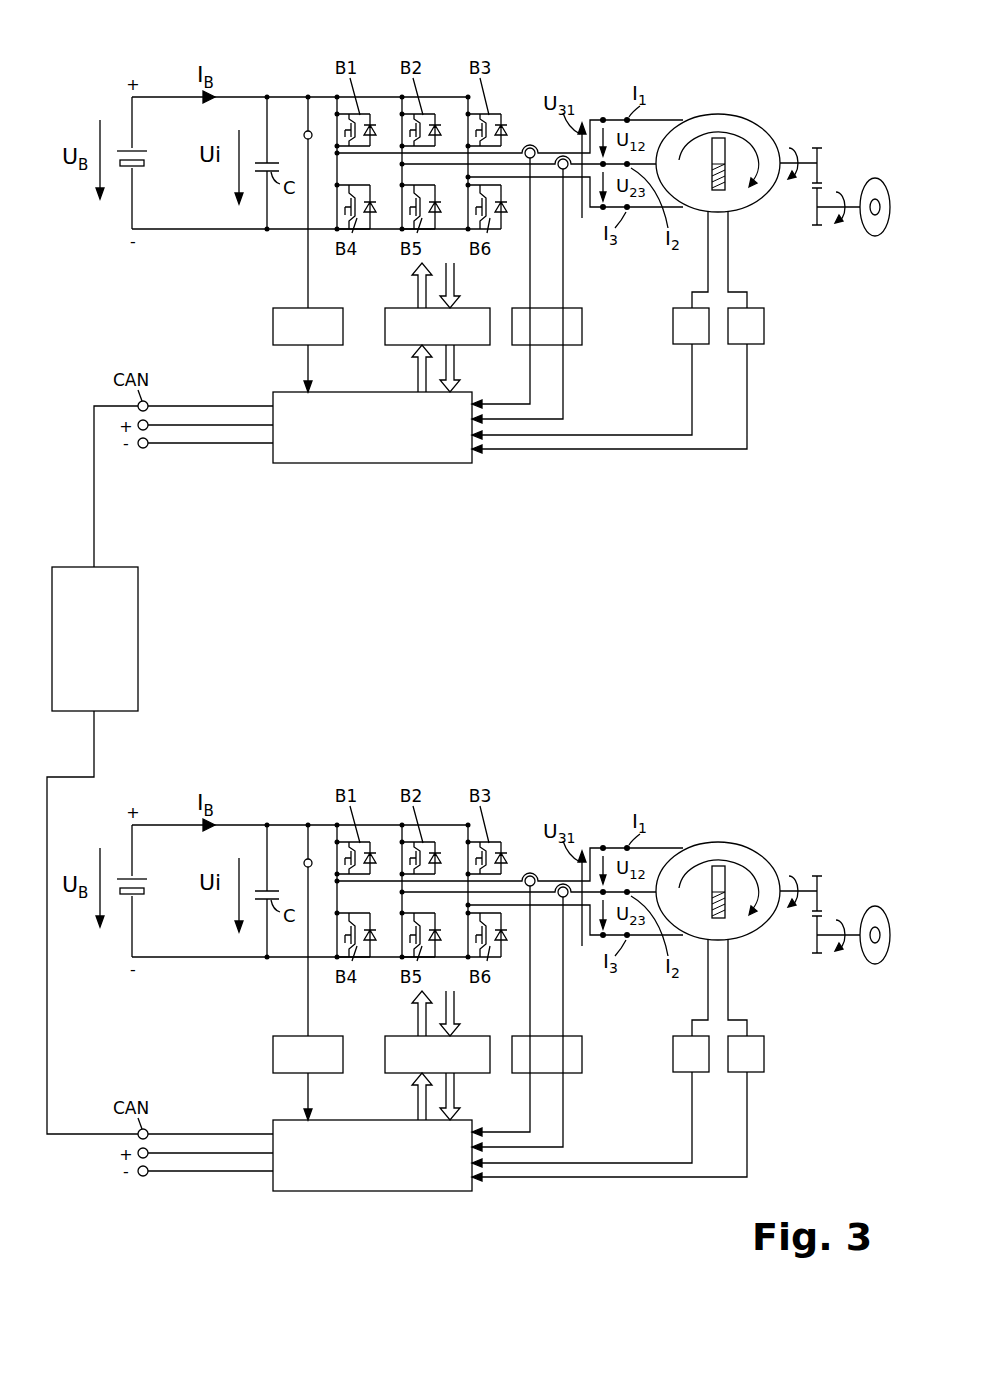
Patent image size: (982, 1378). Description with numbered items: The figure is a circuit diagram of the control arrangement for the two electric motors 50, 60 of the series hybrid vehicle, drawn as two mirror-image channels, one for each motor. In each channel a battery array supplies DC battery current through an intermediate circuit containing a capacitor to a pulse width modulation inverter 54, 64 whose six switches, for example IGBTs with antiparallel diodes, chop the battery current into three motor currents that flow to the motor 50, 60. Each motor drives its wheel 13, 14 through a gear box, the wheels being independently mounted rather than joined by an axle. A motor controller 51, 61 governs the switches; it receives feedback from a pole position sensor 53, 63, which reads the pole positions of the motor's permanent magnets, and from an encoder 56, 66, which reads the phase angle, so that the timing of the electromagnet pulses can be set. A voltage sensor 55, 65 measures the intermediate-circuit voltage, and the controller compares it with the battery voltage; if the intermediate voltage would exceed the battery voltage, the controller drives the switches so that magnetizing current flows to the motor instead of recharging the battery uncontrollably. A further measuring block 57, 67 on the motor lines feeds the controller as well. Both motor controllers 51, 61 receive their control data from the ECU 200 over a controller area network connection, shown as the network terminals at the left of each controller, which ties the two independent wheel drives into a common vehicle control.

The wheel 13 is at (876, 178).
The wheel 14 is at (877, 906).
The electric motor 50 is at (742, 117).
The motor controller 51 is at (432, 452).
The pole position sensor 53 is at (757, 322).
The PWM inverter 54 is at (333, 53).
The voltage sensor 55 is at (287, 318).
The encoder 56 is at (678, 316).
The current measuring unit (first) 57 is at (568, 321).
The electric motor 60 is at (742, 846).
The motor controller 61 is at (405, 1178).
The pole position sensor 63 is at (765, 1052).
The PWM inverter 64 is at (333, 781).
The voltage sensor 65 is at (282, 1040).
The encoder 66 is at (678, 1055).
The current measuring unit (second) 67 is at (576, 1050).
The ECU 200 is at (140, 641).